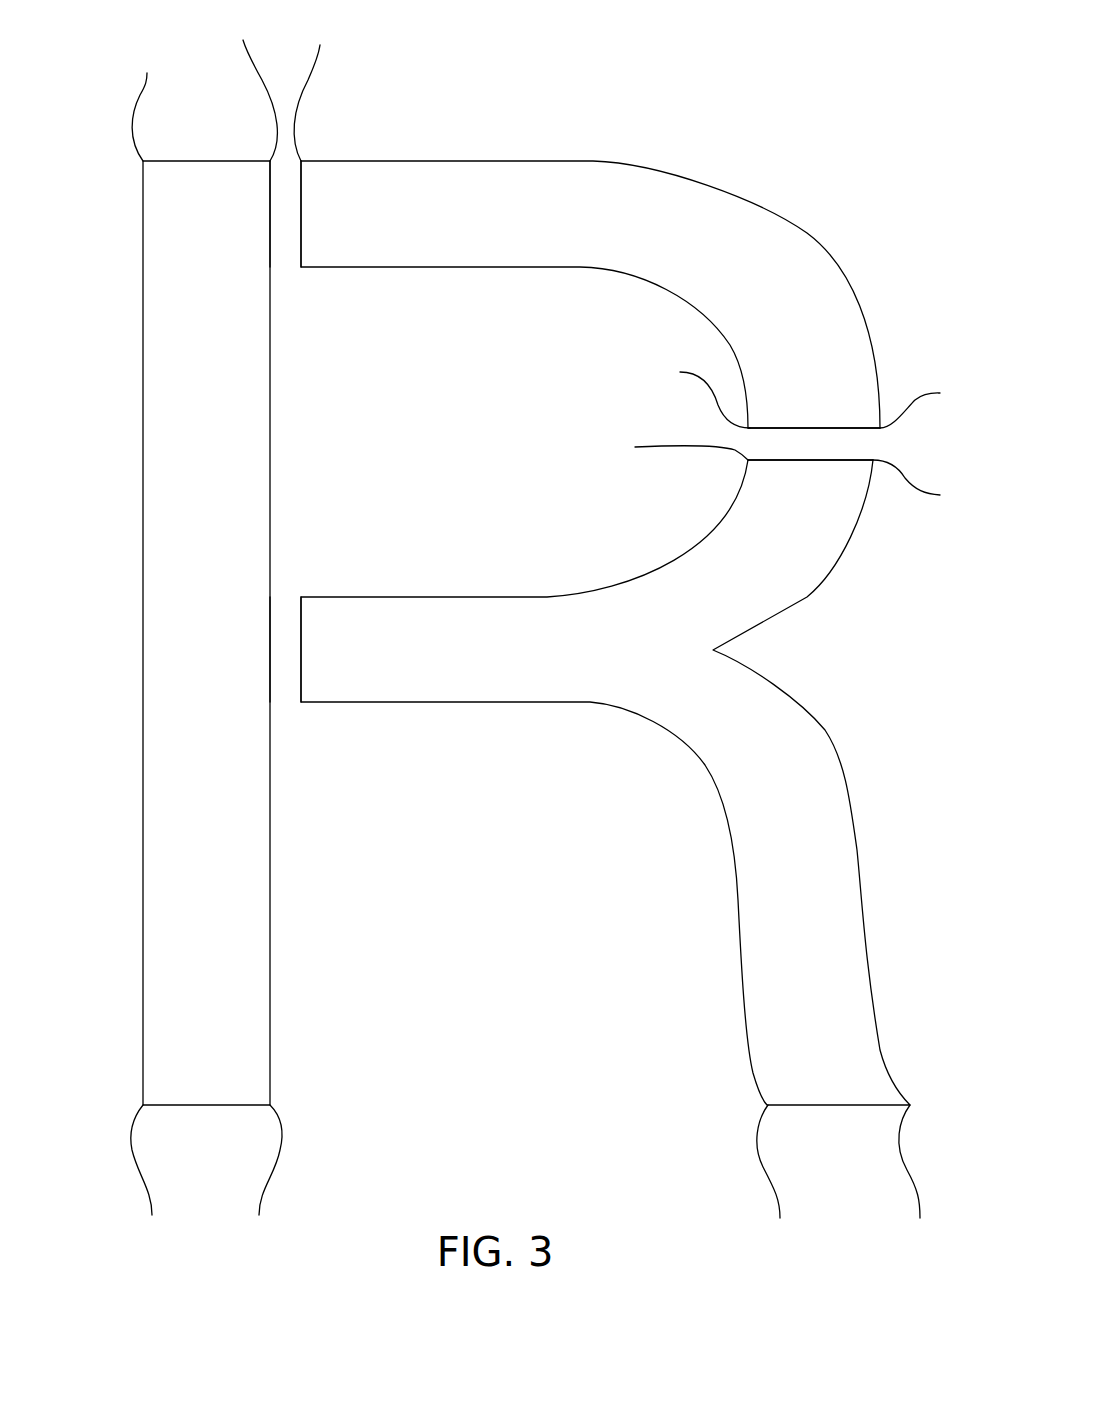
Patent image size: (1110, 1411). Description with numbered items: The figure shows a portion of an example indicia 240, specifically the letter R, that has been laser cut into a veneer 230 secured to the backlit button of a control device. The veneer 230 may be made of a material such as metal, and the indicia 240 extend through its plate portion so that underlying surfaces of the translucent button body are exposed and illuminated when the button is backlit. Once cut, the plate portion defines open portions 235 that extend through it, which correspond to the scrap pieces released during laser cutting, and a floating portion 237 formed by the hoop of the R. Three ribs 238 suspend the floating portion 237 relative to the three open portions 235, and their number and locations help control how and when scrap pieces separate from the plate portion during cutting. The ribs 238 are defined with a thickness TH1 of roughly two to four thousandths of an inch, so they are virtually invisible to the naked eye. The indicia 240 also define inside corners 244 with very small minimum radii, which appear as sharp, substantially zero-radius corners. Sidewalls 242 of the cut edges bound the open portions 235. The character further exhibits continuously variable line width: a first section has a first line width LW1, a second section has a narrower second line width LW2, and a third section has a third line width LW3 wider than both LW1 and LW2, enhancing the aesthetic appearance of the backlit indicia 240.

The veneer 230 is at (69, 601).
The open portions 235 is at (663, 230).
The floating portion 237 is at (513, 390).
The ribs 238 is at (282, 193).
The indicia 240 is at (496, 578).
The sidewall 242 is at (301, 235).
The corners 244 is at (318, 822).
The thickness TH1 is at (222, 211).
The first line width LW1 is at (545, 547).
The second line width LW2 is at (867, 703).
The third line width LW3 is at (700, 784).